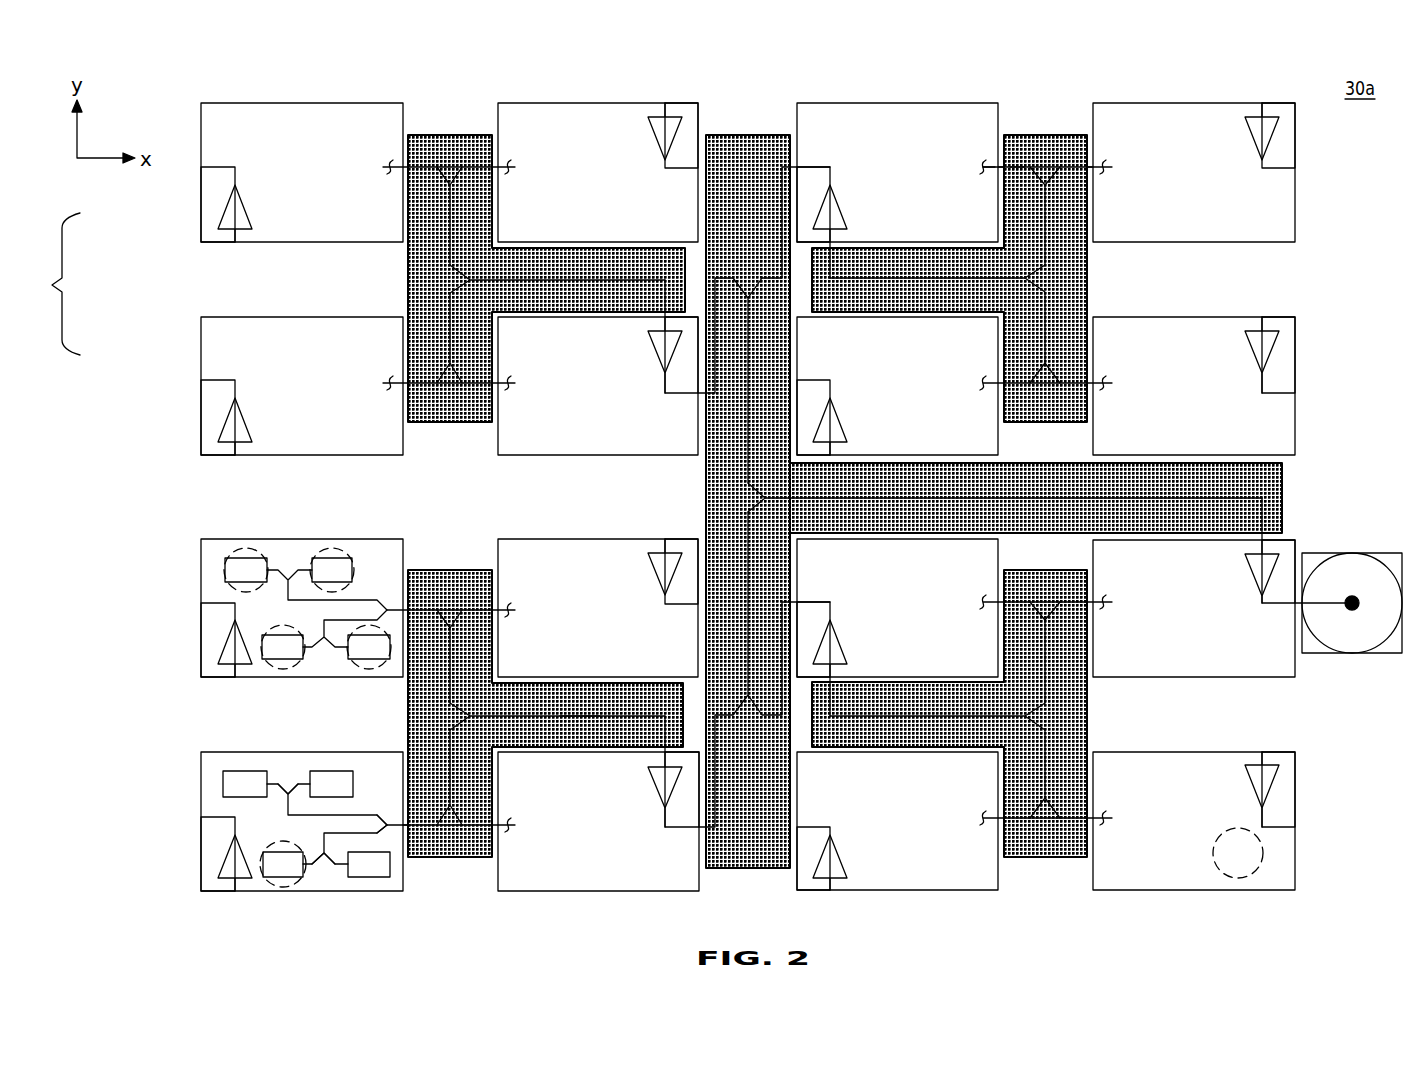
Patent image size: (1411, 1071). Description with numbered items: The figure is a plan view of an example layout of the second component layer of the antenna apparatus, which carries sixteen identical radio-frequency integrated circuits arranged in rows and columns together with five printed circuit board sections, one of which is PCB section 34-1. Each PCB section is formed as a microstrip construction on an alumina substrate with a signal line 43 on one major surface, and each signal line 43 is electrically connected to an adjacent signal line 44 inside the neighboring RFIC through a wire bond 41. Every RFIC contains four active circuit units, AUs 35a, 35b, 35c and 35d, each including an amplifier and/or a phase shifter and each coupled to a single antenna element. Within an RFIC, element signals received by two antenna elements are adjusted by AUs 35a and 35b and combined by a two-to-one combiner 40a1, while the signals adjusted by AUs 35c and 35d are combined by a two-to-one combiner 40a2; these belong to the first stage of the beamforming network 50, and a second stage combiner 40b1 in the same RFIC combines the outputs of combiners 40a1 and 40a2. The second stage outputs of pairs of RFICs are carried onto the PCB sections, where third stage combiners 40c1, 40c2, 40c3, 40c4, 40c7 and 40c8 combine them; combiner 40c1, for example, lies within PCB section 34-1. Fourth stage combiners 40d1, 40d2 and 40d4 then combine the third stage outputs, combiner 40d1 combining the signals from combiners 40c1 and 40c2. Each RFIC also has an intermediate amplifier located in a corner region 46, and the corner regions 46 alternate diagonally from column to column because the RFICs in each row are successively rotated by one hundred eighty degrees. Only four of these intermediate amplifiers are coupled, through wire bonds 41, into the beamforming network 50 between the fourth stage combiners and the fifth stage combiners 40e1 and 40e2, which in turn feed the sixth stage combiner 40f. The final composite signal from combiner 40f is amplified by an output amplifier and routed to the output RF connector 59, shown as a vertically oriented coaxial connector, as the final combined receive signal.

The active circuit unit 35a is at (223, 784).
The active circuit unit 35b is at (322, 771).
The active circuit unit 35c is at (268, 878).
The active circuit unit 35d is at (378, 878).
The first stage 2:1 combiner 40a1 is at (288, 792).
The first stage 2:1 combiner 40a2 is at (330, 856).
The second stage combiner 40b1 is at (382, 828).
The third stage combiner 40c1 is at (455, 812).
The third stage combiner 40c2 is at (455, 612).
The third stage combiner 40c3 is at (444, 172).
The third stage combiner 40c4 is at (460, 375).
The third stage combiner 40c7 is at (1053, 613).
The third stage combiner 40c8 is at (1058, 800).
The fourth stage 2:1 combiner 40d1 is at (472, 706).
The fourth stage combiner 40d2 is at (450, 268).
The fourth stage combiner 40d4 is at (1090, 714).
The fifth stage combiner 40e1 is at (742, 290).
The fifth stage 2:1 combiner 40e2 is at (750, 702).
The sixth stage combiner 40f is at (748, 497).
The wire bond 41 is at (998, 173).
The signal line 43 is at (1018, 167).
The signal line 44 is at (985, 163).
The corner region 46 is at (1280, 352).
The PCB section 34-1 is at (432, 570).
The beamforming network 50 is at (68, 286).
The output RF connector 59 is at (1323, 553).